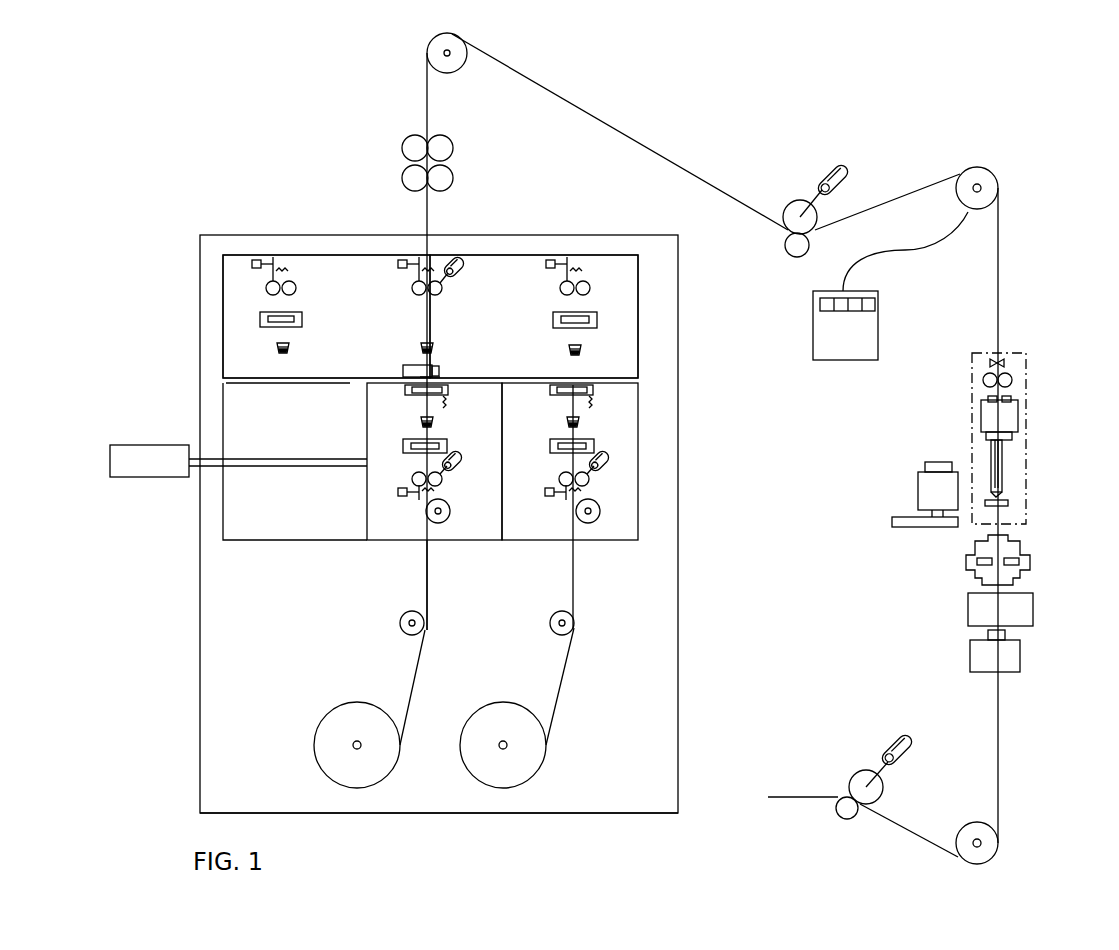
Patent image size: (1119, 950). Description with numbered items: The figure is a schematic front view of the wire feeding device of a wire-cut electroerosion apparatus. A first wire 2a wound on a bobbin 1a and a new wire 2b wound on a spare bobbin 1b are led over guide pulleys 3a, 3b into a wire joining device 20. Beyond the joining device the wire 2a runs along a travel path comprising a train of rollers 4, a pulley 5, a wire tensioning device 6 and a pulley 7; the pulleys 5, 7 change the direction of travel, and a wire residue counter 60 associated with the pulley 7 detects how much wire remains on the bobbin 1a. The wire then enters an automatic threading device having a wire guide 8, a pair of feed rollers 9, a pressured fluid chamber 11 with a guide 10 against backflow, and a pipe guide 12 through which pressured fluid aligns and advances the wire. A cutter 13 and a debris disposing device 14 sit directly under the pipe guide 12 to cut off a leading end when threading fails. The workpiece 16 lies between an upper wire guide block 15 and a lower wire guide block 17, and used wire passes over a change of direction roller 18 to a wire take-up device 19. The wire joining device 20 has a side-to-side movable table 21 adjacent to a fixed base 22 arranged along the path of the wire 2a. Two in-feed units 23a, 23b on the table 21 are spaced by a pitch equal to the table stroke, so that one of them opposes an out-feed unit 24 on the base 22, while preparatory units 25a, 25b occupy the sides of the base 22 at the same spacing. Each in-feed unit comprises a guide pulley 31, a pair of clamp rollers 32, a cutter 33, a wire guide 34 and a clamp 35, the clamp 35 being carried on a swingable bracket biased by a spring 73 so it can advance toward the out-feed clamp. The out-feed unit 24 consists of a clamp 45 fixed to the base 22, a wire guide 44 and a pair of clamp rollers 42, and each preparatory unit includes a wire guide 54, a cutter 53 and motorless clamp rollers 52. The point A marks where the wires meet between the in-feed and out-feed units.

The bobbin 1a is at (372, 778).
The spare bobbin 1b is at (518, 775).
The first wire 2a is at (425, 592).
The new wire 2b is at (577, 590).
The guide pulley 3a is at (403, 633).
The guide pulley 3b is at (575, 629).
The train of rollers 4 is at (456, 136).
The pulley 5 is at (462, 42).
The wire tensioning device 6 is at (798, 202).
The pulley 7 is at (992, 175).
The wire guide 8 is at (1006, 350).
The feed rollers 9 is at (1012, 378).
The guide 10 is at (1018, 392).
The pressured fluid chamber 11 is at (1020, 418).
The pipe guide 12 is at (1003, 468).
The cutter 13 is at (1010, 503).
The device for disposing of debris 14 is at (908, 528).
The upper wire guide block 15 is at (1030, 560).
The workpiece 16 is at (1033, 612).
The lower wire guide block 17 is at (1018, 652).
The change of direction roller 18 is at (998, 845).
The wire take-up device 19 is at (856, 773).
The wire joining device 20 is at (297, 208).
The table 21 is at (633, 537).
The fixed base 22 is at (630, 340).
The in-feed unit 23a is at (400, 487).
The in-feed unit 23b is at (625, 480).
The out-feed unit 24 is at (373, 243).
The preparatory unit 25a is at (240, 303).
The preparatory unit 25b is at (603, 300).
The guide pulley 31 is at (445, 522).
The clamp rollers 32 is at (403, 490).
The cutter 33 is at (403, 447).
The wire guide 34 is at (420, 421).
The clamp 35 is at (405, 390).
The clamp rollers 42 is at (441, 281).
The wire guide 44 is at (420, 349).
The clamp 45 is at (440, 367).
The clamp rollers 52 is at (268, 283).
The cutter 53 is at (262, 322).
The wire guide 54 is at (280, 353).
The wire residue counter 60 is at (878, 300).
The spring 73 is at (598, 402).
The joining point A is at (442, 376).